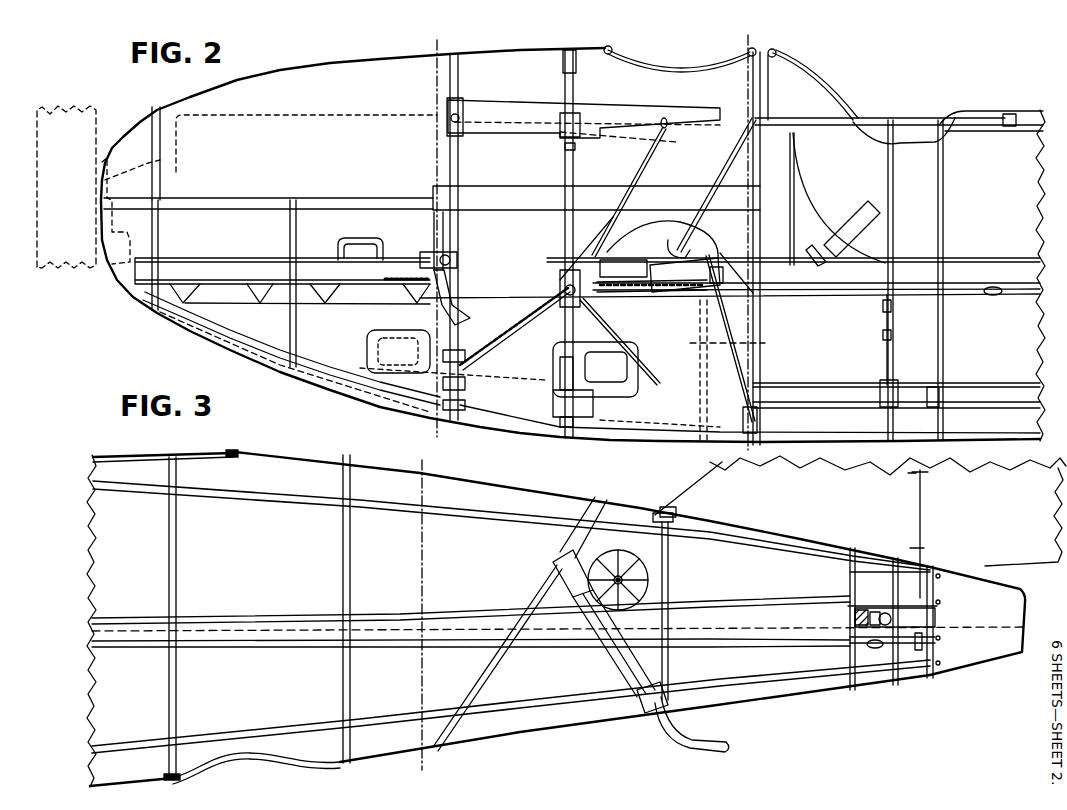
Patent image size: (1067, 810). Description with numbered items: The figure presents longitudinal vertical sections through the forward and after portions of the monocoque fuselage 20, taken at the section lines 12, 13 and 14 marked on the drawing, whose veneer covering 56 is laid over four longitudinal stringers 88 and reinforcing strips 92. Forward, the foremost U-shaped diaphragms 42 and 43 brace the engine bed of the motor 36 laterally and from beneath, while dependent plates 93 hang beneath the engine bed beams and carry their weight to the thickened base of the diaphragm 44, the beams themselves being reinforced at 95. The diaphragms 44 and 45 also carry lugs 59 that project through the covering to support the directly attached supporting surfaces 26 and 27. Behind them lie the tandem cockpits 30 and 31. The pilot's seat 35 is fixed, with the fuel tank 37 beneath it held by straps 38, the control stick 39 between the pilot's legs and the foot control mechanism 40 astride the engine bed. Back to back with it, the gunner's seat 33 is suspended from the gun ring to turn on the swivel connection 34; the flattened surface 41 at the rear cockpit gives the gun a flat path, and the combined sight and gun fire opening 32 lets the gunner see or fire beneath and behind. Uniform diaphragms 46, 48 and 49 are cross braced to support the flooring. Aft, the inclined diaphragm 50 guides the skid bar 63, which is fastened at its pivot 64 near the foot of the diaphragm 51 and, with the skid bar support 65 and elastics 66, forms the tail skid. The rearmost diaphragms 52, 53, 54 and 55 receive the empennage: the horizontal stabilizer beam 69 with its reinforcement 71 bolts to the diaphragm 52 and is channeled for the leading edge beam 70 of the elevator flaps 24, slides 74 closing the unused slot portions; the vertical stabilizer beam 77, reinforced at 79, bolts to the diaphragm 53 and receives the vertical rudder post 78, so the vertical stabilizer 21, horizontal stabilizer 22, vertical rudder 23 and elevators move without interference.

In FIG. 2, the forward frame station 12 is at (437, 45).
In FIG. 2, the rear frame station 13 is at (750, 52).
In FIG. 3, the tail frame station 14 is at (422, 460).
In FIG. 2, the fuselage 20 is at (307, 61).
In FIG. 3, the vertical stabilizer 21 is at (708, 486).
In FIG. 3, the horizontal stabilizer 22 is at (776, 630).
In FIG. 3, the vertical rudder 23 is at (1046, 560).
In FIG. 3, the elevator flaps 24 is at (987, 630).
In FIG. 2, the supporting surface 26 is at (441, 120).
In FIG. 2, the supporting surface 27 is at (599, 368).
In FIG. 2, the cockpit 30 is at (672, 66).
In FIG. 2, the rear cockpit 31 is at (838, 113).
In FIG. 3, the combined sight and gun fire opening 32 is at (256, 761).
In FIG. 2, the gunner's seat 33 is at (811, 227).
In FIG. 2, the swivel connection 34 is at (890, 362).
In FIG. 2, the pilot's seat 35 is at (738, 163).
In FIG. 2, the motor 36 is at (240, 100).
In FIG. 2, the fuel tank 37 is at (741, 345).
In FIG. 2, the straps 38 is at (728, 327).
In FIG. 2, the control stick 39 is at (566, 198).
In FIG. 2, the foot control mechanism 40 is at (448, 290).
In FIG. 2, the flattened surface 41 is at (1008, 117).
In FIG. 3, the flattened surface 41 is at (206, 454).
In FIG. 2, the diaphragm 42 is at (158, 230).
In FIG. 2, the diaphragm 43 is at (296, 232).
In FIG. 2, the diaphragm 44 is at (458, 232).
In FIG. 2, the diaphragm 45 is at (567, 341).
In FIG. 2, the diaphragm 46 is at (760, 372).
In FIG. 3, the diaphragm 48 is at (176, 578).
In FIG. 3, the diaphragm 49 is at (350, 578).
In FIG. 3, the diaphragm 50 is at (551, 588).
In FIG. 3, the diaphragm 51 is at (668, 573).
In FIG. 3, the diaphragm 52 is at (850, 578).
In FIG. 3, the diaphragm 53 is at (918, 575).
In FIG. 3, the diaphragm 54 is at (930, 592).
In FIG. 3, the diaphragm 55 is at (935, 622).
In FIG. 2, the veneer covering 56 is at (1022, 428).
In FIG. 3, the veneer covering 56 is at (505, 741).
In FIG. 2, the lugs 59 is at (443, 390).
In FIG. 3, the skid bar 63 is at (628, 678).
In FIG. 3, the skid bar fastening 64 is at (670, 698).
In FIG. 3, the skid bar support 65 is at (616, 582).
In FIG. 3, the elastics 66 is at (590, 577).
In FIG. 3, the horizontal stabilizer beam 69 is at (882, 628).
In FIG. 3, the leading edge beam 70 is at (890, 630).
In FIG. 3, the reinforcement 71 is at (857, 624).
In FIG. 3, the slides 74 is at (920, 622).
In FIG. 3, the vertical stabilizer beam 77 is at (917, 654).
In FIG. 3, the vertical rudder post 78 is at (925, 565).
In FIG. 3, the reinforcement 79 is at (918, 553).
In FIG. 3, the stringers 88 is at (308, 500).
In FIG. 2, the reinforcing strips 92 is at (443, 200).
In FIG. 3, the reinforcing strips 92 is at (552, 618).
In FIG. 2, the dependent plates 93 is at (337, 335).
In FIG. 2, the engine bed reinforcement 95 is at (307, 305).